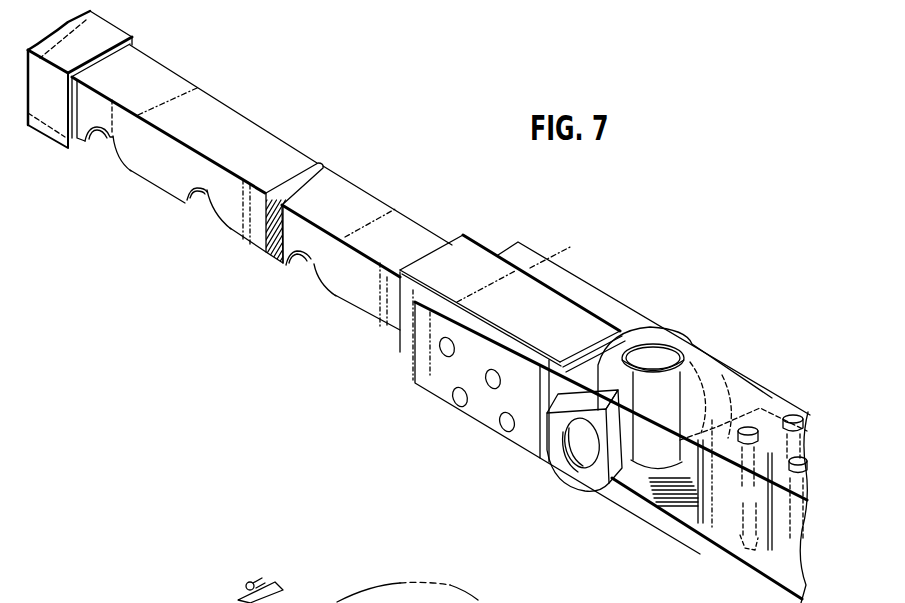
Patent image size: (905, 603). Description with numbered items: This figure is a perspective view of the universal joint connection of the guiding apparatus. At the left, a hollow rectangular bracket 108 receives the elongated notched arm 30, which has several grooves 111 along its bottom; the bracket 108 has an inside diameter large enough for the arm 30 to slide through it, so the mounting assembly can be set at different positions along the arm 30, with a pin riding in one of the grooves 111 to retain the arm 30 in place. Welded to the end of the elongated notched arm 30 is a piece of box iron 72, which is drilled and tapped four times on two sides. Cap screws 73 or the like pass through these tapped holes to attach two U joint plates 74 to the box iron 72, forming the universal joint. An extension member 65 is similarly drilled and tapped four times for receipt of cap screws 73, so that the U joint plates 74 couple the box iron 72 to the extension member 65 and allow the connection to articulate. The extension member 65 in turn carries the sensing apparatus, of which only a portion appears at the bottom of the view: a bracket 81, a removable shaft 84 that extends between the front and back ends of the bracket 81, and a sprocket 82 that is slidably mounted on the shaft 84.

The hollow rectangular bracket 108 is at (107, 45).
The elongated notched arm 30 is at (265, 133).
The grooves 111 is at (113, 138).
The box iron 72 is at (468, 248).
The U joint plates 74 is at (598, 302).
The cap screws 73 is at (448, 352).
The extension member 65 is at (723, 513).
The bracket 81 is at (238, 600).
The removable shaft 84 is at (276, 591).
The sprocket 82 is at (466, 600).